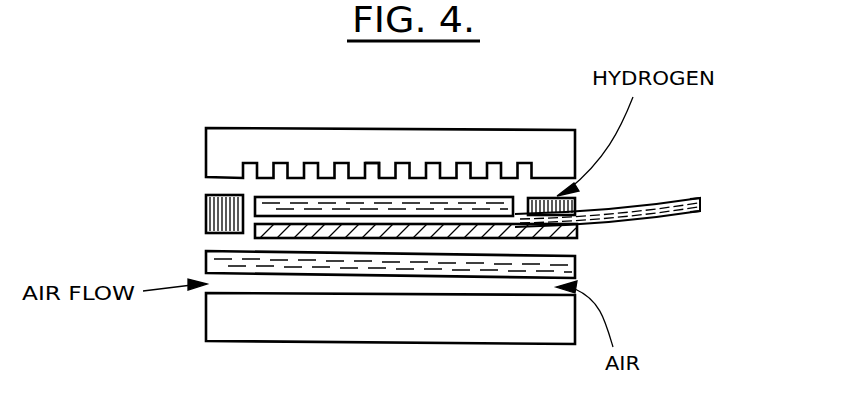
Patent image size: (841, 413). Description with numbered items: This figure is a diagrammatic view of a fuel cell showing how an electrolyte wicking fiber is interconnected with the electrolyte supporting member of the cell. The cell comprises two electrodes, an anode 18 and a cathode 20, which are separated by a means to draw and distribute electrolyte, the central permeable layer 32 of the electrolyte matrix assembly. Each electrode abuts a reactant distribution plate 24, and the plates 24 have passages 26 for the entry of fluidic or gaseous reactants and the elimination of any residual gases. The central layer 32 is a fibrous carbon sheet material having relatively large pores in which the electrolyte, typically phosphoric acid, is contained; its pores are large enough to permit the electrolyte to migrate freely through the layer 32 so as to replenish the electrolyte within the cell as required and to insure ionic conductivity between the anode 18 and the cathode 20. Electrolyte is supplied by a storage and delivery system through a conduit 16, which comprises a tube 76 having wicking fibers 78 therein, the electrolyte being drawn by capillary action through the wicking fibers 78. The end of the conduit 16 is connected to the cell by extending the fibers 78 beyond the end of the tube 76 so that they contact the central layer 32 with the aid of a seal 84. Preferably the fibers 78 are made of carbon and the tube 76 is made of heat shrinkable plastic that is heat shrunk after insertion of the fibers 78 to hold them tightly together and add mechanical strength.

The conduit 16 is at (720, 220).
The anode 18 is at (267, 198).
The cathode 20 is at (207, 260).
The reactant distribution plate 24 is at (436, 129).
The passage 26 is at (372, 167).
The central permeable layer 32 is at (577, 237).
The tube 76 is at (633, 220).
The wicking fibers 78 is at (633, 220).
The seal 84 is at (642, 125).